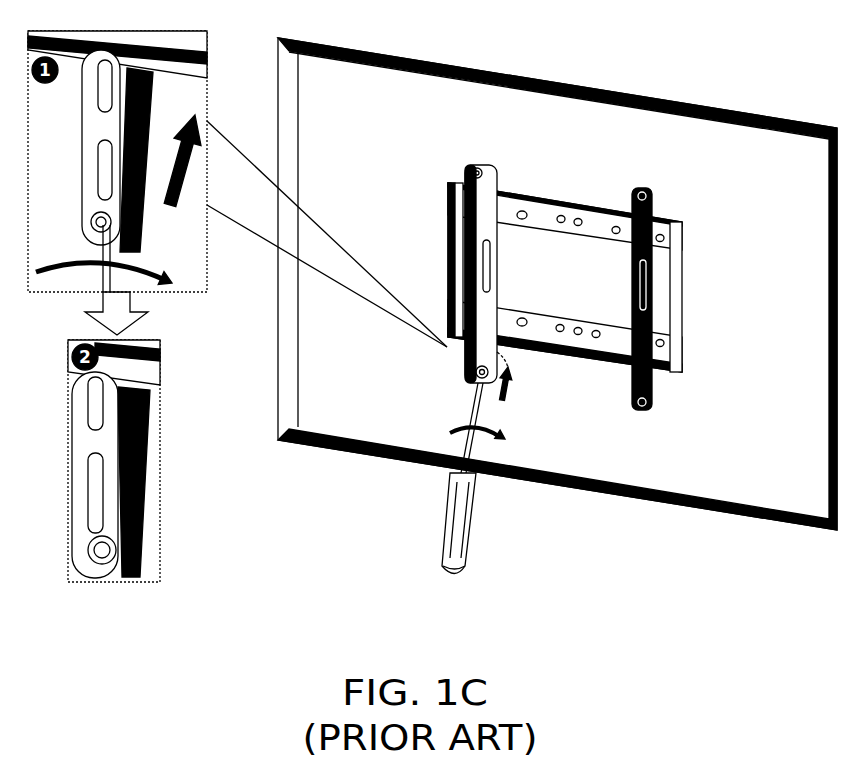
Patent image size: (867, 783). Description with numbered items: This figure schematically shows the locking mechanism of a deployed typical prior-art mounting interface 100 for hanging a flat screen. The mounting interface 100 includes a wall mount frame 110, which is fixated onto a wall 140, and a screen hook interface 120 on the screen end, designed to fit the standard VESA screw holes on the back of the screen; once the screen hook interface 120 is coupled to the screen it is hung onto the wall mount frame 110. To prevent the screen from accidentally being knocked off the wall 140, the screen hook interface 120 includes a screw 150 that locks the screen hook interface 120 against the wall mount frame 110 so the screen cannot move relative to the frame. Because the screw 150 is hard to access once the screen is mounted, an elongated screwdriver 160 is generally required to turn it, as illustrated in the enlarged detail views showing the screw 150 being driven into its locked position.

The mounting interface 100 is at (557, 272).
The wall mount frame 110 is at (613, 260).
The screen hook interface 120 is at (631, 200).
The wall 140 is at (522, 78).
The screw 150 is at (137, 103).
The elongated screwdriver 160 is at (440, 562).